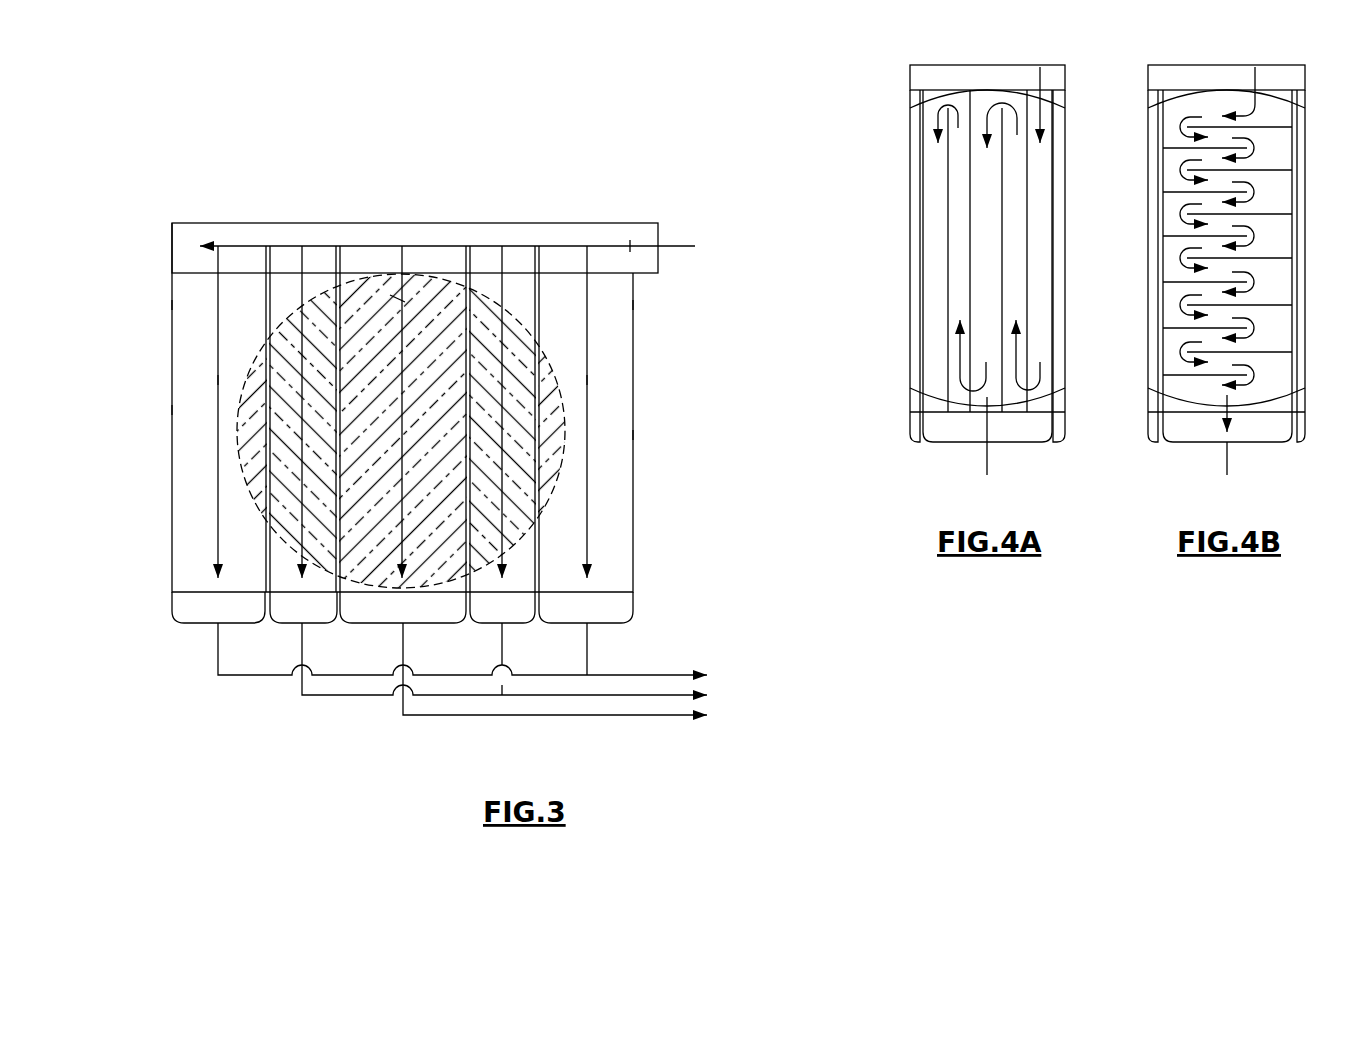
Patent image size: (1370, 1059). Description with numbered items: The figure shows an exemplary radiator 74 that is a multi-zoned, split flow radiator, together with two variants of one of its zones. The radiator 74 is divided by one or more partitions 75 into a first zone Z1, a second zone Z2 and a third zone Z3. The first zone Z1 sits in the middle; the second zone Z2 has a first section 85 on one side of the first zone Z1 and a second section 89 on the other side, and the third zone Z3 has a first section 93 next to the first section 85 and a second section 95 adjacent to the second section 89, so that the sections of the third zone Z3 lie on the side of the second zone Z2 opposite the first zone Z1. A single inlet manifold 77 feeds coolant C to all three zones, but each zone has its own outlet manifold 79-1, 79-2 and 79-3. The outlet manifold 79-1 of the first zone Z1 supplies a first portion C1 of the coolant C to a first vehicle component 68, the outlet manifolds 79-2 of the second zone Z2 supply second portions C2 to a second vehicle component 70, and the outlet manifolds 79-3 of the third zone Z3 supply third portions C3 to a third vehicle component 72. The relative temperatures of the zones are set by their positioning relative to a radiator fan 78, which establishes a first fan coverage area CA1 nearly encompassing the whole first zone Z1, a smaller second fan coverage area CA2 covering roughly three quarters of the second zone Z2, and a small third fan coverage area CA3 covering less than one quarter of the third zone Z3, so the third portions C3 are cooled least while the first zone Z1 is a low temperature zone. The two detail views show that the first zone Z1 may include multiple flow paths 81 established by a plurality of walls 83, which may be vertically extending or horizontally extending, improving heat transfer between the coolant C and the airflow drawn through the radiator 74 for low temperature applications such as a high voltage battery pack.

In FIG. 3, the radiator 74 is at (332, 190).
In FIG. 3, the partitions 75 is at (265, 268).
In FIG. 3, the inlet manifold 77 is at (185, 232).
In FIG. 3, the radiator fan 78 is at (523, 313).
In FIG. 3, the first section of the second zone 85 is at (283, 305).
In FIG. 3, the second section of the second zone 89 is at (517, 270).
In FIG. 3, the first section of the third zone 93 is at (180, 410).
In FIG. 3, the second section of the third zone 95 is at (620, 435).
In FIG. 3, the outlet manifold of the first zone 79-1 is at (418, 612).
In FIG. 3, the outlet manifolds of the second zone 79-2 is at (310, 612).
In FIG. 3, the outlet manifolds of the third zone 79-3 is at (212, 612).
In FIG. 4A, the flow paths 81 is at (940, 395).
In FIG. 4B, the flow paths 81 is at (1280, 115).
In FIG. 4A, the walls 83 is at (948, 183).
In FIG. 4B, the walls 83 is at (1163, 238).
In FIG. 3, the third vehicle component 72 is at (908, 672).
In FIG. 3, the second vehicle component 70 is at (921, 701).
In FIG. 3, the first vehicle component 68 is at (908, 730).
In FIG. 3, the first zone Z1 is at (442, 268).
In FIG. 4A, the first zone Z1 is at (982, 83).
In FIG. 4B, the first zone Z1 is at (1220, 83).
In FIG. 3, the second zone Z2 is at (320, 283).
In FIG. 3, the third zone Z3 is at (172, 305).
In FIG. 3, the coolant C is at (630, 246).
In FIG. 4A, the coolant C is at (948, 100).
In FIG. 4B, the coolant C is at (1257, 79).
In FIG. 3, the first portion of the coolant C1 is at (400, 300).
In FIG. 3, the second portions of the coolant C2 is at (270, 530).
In FIG. 3, the third portions of the coolant C3 is at (218, 380).
In FIG. 3, the first fan coverage area CA1 is at (404, 585).
In FIG. 3, the second fan coverage area CA2 is at (517, 537).
In FIG. 3, the third fan coverage area CA3 is at (248, 468).